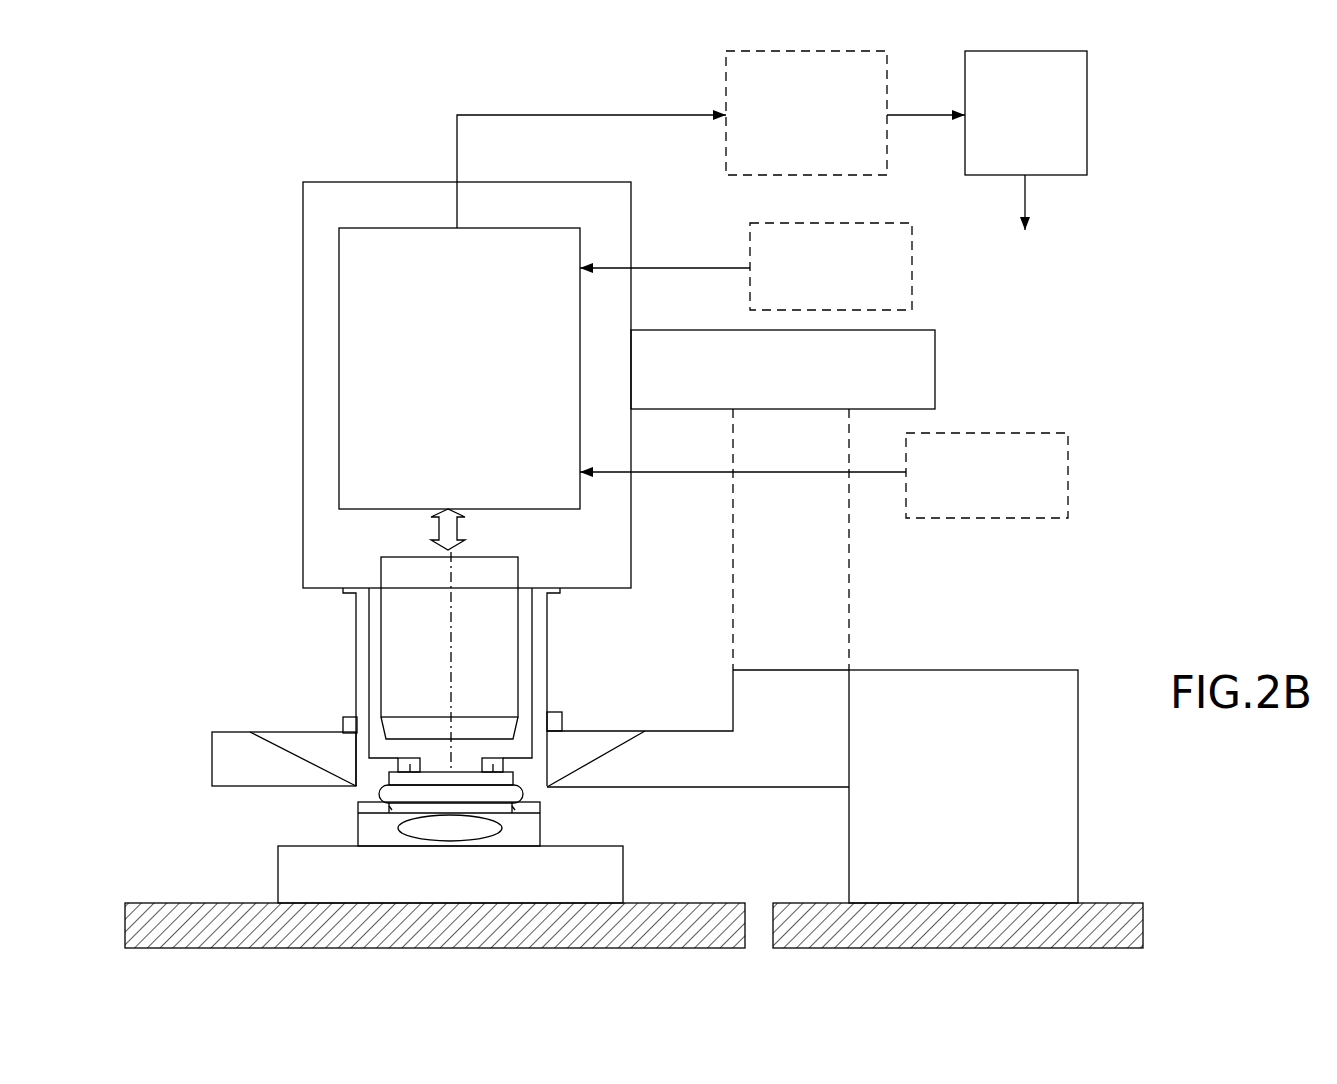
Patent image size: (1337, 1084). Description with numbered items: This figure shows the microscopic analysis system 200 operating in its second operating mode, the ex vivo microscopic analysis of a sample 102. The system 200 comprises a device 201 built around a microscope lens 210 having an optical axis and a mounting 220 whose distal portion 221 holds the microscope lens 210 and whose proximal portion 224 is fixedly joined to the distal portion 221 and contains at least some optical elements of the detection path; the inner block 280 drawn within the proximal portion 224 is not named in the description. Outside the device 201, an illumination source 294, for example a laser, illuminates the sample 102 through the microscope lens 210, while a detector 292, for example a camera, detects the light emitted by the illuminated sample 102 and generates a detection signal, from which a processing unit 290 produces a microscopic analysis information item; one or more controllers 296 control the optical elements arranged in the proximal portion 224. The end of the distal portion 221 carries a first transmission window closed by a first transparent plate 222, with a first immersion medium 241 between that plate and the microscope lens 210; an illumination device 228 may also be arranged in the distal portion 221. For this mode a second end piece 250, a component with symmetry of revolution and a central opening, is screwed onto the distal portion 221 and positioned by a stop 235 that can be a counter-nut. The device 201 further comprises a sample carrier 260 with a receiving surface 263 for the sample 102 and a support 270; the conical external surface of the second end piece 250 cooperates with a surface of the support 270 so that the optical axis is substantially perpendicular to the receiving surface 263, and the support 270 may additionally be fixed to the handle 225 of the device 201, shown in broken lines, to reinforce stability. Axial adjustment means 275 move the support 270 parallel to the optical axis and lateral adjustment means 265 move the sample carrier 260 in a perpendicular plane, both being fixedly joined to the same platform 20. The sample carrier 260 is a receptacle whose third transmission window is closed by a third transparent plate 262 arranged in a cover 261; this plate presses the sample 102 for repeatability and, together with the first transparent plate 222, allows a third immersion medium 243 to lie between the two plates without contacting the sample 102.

The microscopic analysis system 200 is at (1230, 82).
The device for microscopic analysis 201 is at (222, 210).
The mounting 220 is at (303, 518).
The proximal portion 224 is at (620, 540).
The actuator / drive unit 280 is at (339, 375).
The detector 292 is at (726, 90).
The processing unit 290 is at (1087, 140).
The illumination source 294 is at (912, 265).
The handle 225 is at (935, 358).
The controller 296 is at (1068, 472).
The support 270 is at (815, 690).
The axial adjustment means 275 is at (1078, 743).
The microscope lens 210 is at (401, 628).
The distal portion 221 is at (548, 633).
The second end piece 250 is at (288, 745).
The stop 235 is at (560, 722).
The first immersion medium 241 is at (397, 760).
The third immersion medium 243 is at (488, 797).
The illumination device 228 is at (400, 766).
The first transparent plate 222 is at (378, 788).
The sample carrier 260 is at (372, 834).
The cover 261 is at (518, 806).
The sample 102 is at (488, 830).
The third transparent plate 262 is at (403, 808).
The receiving surface 263 is at (536, 837).
The lateral adjustment means 265 is at (298, 888).
The platform 20 is at (158, 918).